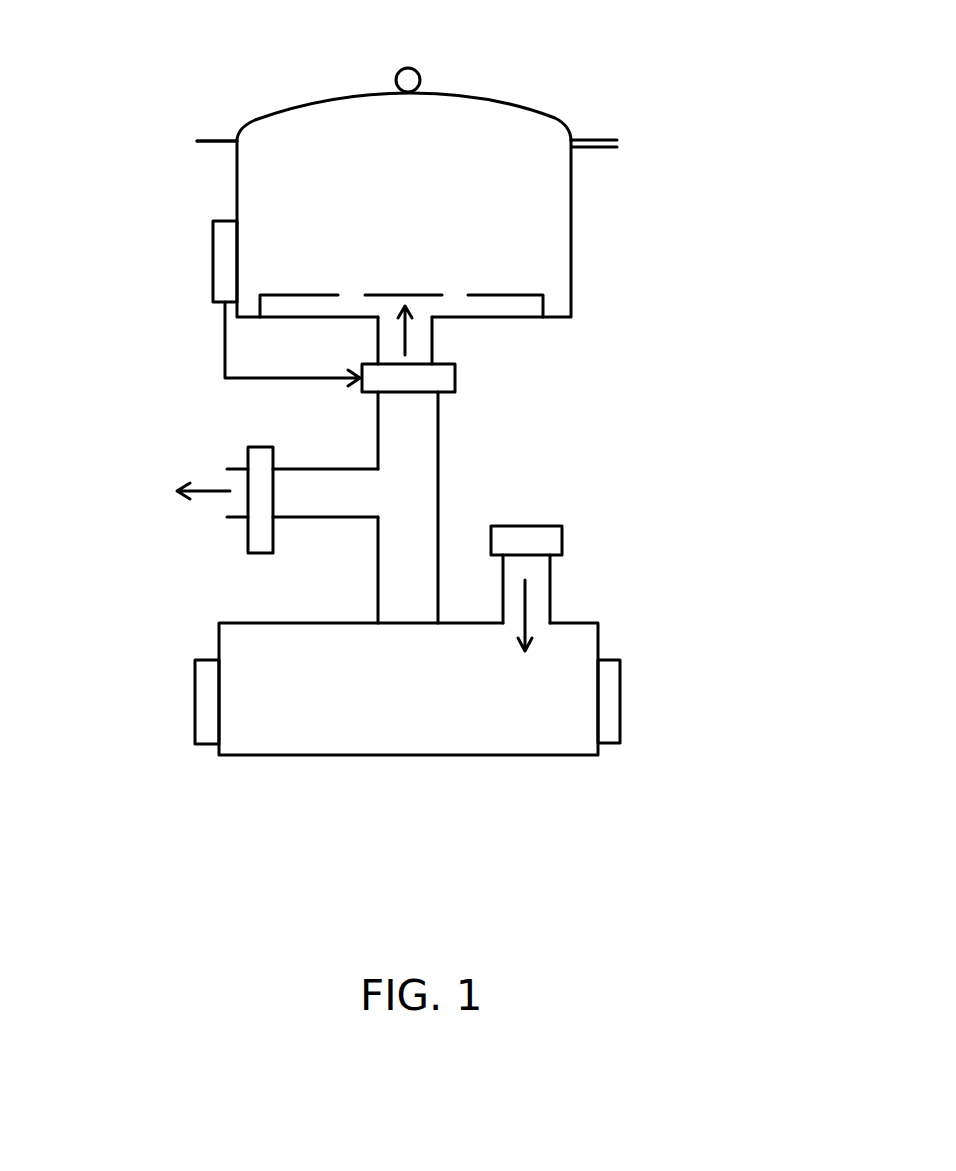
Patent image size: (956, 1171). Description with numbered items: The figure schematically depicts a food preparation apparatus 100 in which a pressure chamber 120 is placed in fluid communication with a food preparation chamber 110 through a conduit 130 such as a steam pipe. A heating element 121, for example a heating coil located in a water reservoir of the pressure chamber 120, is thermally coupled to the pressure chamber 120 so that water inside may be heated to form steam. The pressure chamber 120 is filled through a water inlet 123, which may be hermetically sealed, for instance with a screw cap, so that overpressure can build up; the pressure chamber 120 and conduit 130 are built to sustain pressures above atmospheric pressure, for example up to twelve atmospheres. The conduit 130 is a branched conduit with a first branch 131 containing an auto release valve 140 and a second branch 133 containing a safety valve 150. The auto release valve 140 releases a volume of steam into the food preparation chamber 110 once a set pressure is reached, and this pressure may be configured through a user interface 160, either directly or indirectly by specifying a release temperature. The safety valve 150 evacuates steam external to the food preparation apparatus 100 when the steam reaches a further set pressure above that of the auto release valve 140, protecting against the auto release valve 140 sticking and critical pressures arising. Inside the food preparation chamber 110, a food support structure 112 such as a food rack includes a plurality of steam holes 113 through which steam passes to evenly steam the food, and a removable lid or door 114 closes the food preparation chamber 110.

The food preparation apparatus 100 is at (429, 871).
The food preparation chamber 110 is at (555, 207).
The food support structure 112 is at (546, 300).
The steam holes 113 is at (452, 296).
The removable lid or door 114 is at (481, 95).
The pressure chamber 120 is at (585, 640).
The heating element 121 is at (615, 700).
The water inlet 123 is at (545, 587).
The conduit 130 is at (405, 535).
The first branch 131 is at (413, 437).
The second branch 133 is at (312, 478).
The auto release valve 140 is at (447, 383).
The safety valve 150 is at (250, 447).
The user interface 160 is at (222, 260).